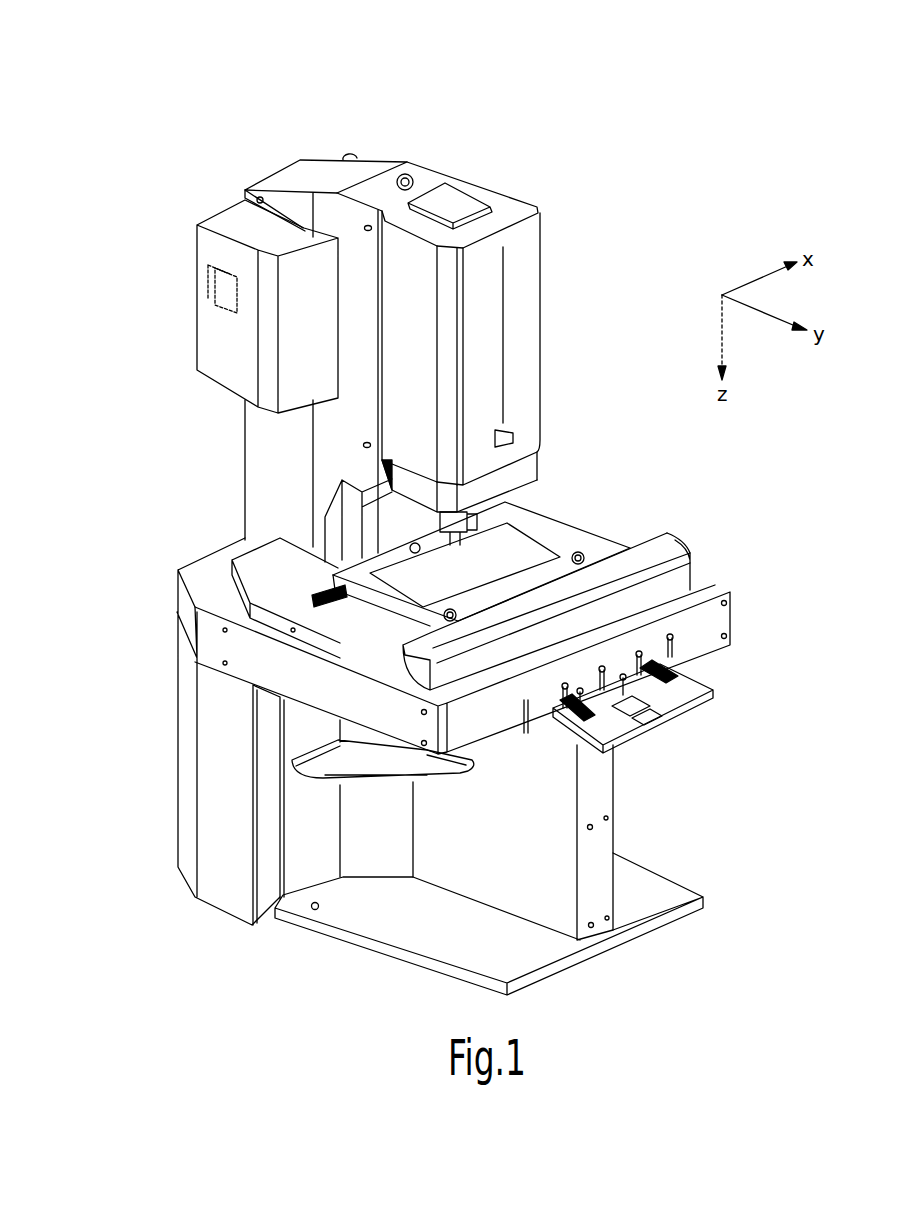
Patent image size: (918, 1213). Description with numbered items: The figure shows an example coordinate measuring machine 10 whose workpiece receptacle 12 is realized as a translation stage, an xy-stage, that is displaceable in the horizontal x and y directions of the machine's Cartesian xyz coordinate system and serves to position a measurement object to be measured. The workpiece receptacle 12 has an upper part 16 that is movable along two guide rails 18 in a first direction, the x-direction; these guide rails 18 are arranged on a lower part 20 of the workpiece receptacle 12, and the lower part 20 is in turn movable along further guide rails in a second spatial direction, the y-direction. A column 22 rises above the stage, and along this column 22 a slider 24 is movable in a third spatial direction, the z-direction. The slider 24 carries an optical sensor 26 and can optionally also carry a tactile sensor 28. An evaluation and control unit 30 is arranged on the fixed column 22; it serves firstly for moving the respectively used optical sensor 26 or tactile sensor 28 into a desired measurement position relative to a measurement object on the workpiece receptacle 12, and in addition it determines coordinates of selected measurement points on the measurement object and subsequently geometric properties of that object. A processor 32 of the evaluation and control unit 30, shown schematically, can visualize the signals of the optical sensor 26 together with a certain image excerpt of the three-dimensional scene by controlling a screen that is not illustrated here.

The coordinate measuring machine 10 is at (623, 153).
The workpiece receptacle 12 is at (600, 541).
The upper part 16 is at (368, 603).
The guide rails 18 is at (320, 600).
The lower part 20 is at (257, 588).
The column 22 is at (378, 162).
The slider 24 is at (540, 463).
The optical sensor 26 is at (585, 540).
The tactile sensor 28 is at (447, 541).
The evaluation and control unit 30 is at (215, 216).
The processor 32 is at (222, 290).